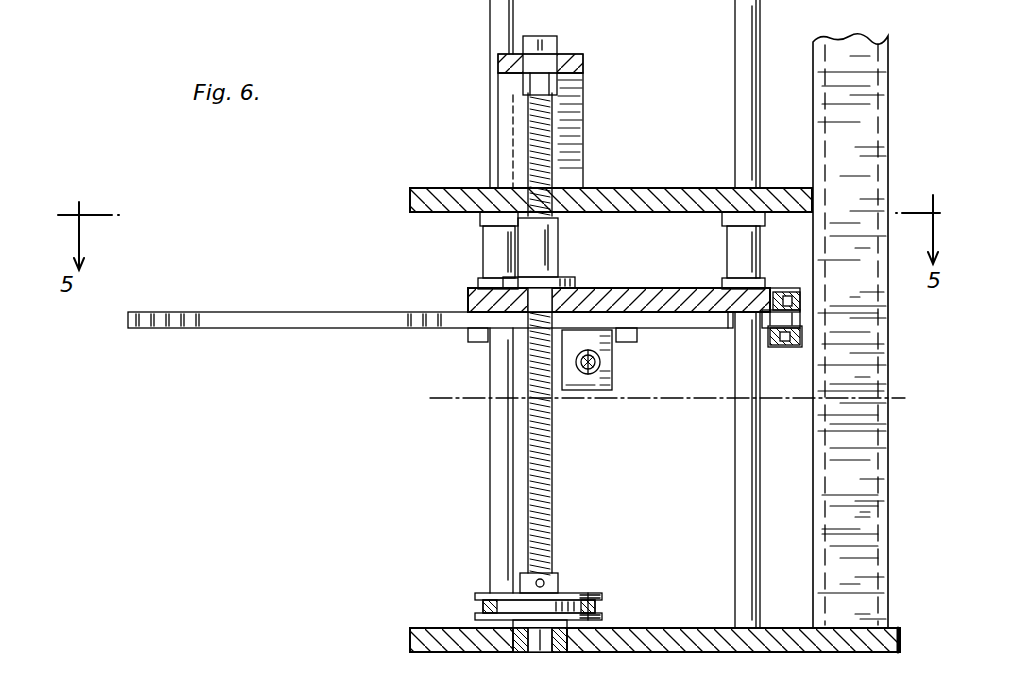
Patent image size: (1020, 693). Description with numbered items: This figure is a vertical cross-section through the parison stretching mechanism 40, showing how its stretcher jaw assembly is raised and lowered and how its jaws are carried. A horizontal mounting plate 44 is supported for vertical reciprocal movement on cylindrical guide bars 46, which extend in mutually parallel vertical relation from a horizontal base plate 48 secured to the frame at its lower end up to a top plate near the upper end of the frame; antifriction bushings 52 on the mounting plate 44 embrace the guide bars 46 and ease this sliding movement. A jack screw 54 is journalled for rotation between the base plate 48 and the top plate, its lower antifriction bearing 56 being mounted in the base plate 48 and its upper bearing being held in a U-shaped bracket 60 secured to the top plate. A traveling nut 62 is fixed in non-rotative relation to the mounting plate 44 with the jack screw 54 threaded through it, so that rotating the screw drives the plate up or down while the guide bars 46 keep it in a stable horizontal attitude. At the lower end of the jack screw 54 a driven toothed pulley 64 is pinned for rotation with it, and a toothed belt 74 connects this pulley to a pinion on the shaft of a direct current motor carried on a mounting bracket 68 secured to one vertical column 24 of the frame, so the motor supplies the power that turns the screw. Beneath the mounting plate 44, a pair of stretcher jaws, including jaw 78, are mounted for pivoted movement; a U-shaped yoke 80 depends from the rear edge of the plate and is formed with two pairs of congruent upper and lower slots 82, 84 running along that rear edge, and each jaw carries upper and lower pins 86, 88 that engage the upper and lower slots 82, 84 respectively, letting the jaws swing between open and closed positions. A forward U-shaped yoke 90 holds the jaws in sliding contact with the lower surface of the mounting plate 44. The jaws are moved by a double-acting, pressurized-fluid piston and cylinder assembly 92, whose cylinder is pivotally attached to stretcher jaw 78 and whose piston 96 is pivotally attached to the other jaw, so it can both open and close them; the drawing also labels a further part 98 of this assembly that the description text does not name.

The column 24 is at (892, 140).
The parison stretching mechanism 40 is at (348, 348).
The mounting plate 44 is at (632, 292).
The guide bar 46 is at (745, 66).
The base plate 48 is at (430, 628).
The antifriction bushing 52 is at (483, 250).
The jack screw 54 is at (550, 160).
The lower antifriction bearing 56 is at (515, 632).
The U-shaped bracket 60 is at (583, 97).
The traveling nut 62 is at (558, 232).
The driven toothed pulley 64 is at (580, 593).
The mounting bracket 68 is at (540, 36).
The toothed belt 74 is at (602, 606).
The stretcher jaw 78 is at (253, 312).
The U-shaped yoke 80 is at (800, 347).
The upper slot 82 is at (805, 302).
The lower slot 84 is at (800, 336).
The upper pin 86 is at (790, 295).
The lower pin 88 is at (790, 346).
The forward U-shaped yoke 90 is at (478, 343).
The piston and cylinder assembly 92 is at (641, 358).
The piston 96 is at (588, 370).
The screw 98 is at (613, 375).